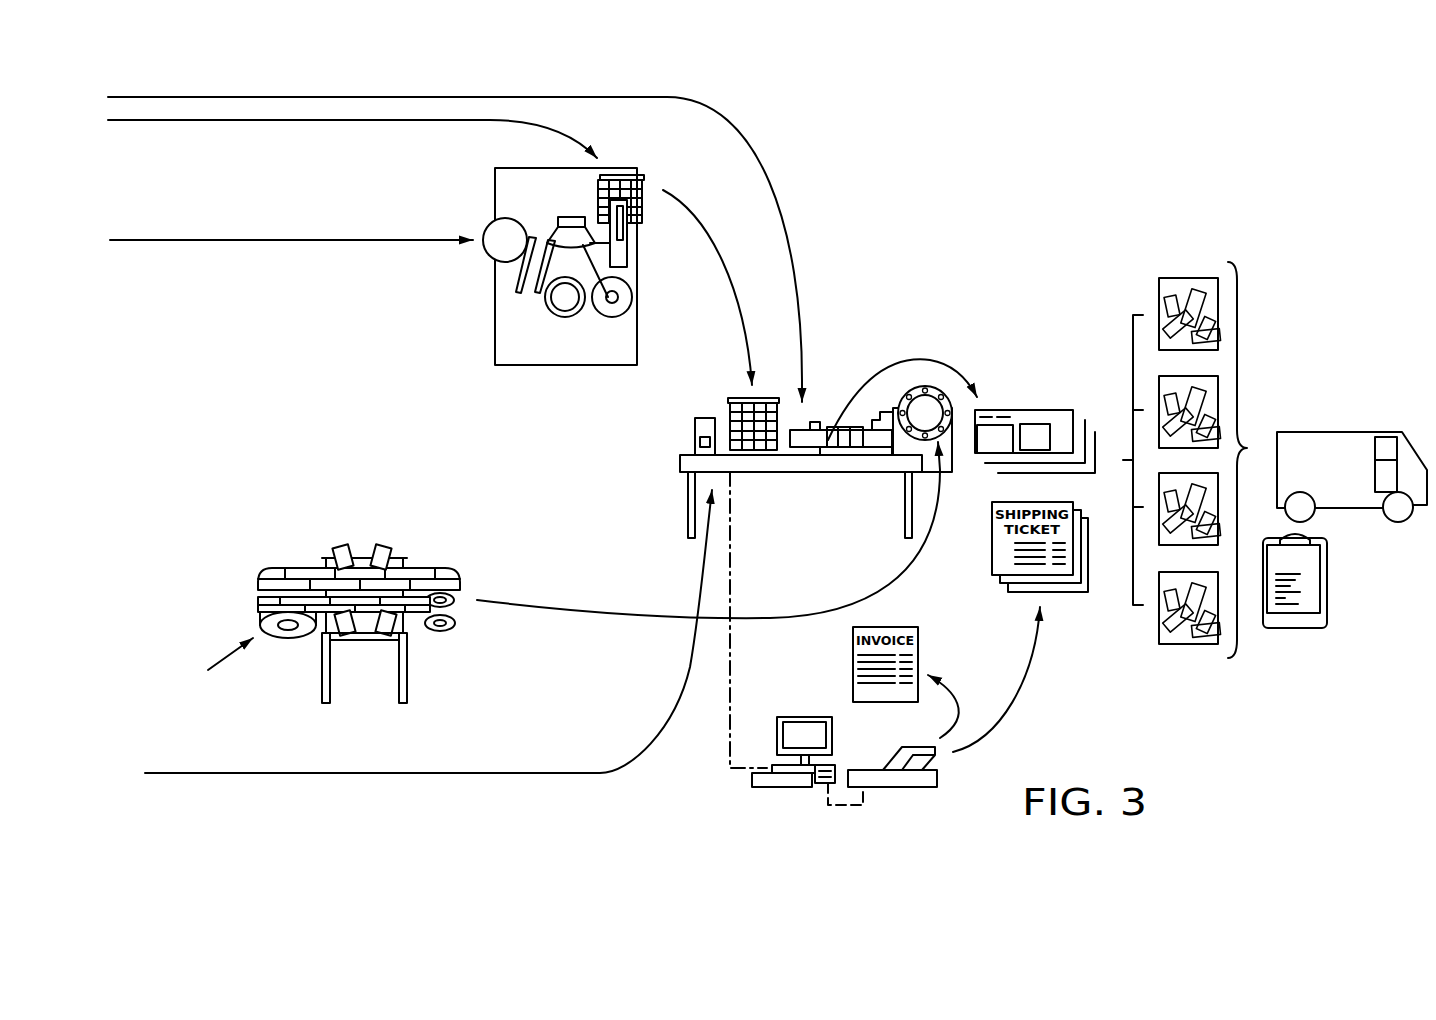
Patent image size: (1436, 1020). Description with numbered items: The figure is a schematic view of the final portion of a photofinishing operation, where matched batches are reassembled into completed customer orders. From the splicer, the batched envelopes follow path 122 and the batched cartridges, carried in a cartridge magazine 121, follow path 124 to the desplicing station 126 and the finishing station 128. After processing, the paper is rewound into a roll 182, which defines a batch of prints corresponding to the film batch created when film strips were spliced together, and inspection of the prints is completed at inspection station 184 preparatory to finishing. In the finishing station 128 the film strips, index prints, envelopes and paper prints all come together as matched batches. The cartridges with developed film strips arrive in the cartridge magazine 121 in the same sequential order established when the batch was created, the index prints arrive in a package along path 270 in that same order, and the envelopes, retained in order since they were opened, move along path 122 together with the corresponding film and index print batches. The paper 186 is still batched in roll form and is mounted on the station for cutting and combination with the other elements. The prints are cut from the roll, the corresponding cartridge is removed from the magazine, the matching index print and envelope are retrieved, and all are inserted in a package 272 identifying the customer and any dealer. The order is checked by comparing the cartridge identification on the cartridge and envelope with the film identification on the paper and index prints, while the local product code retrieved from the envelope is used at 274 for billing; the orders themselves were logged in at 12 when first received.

The log-in 12 is at (1328, 618).
The cartridge magazine 121 is at (650, 177).
The path 122 is at (332, 97).
The path 124 is at (275, 121).
The desplicing station 126 is at (472, 325).
The finishing station 128 is at (868, 352).
The roll 182 is at (300, 636).
The inspection station 184 is at (316, 549).
The paper 186 is at (936, 388).
The path 270 is at (703, 570).
The package 272 is at (1037, 417).
The billing 274 is at (732, 660).